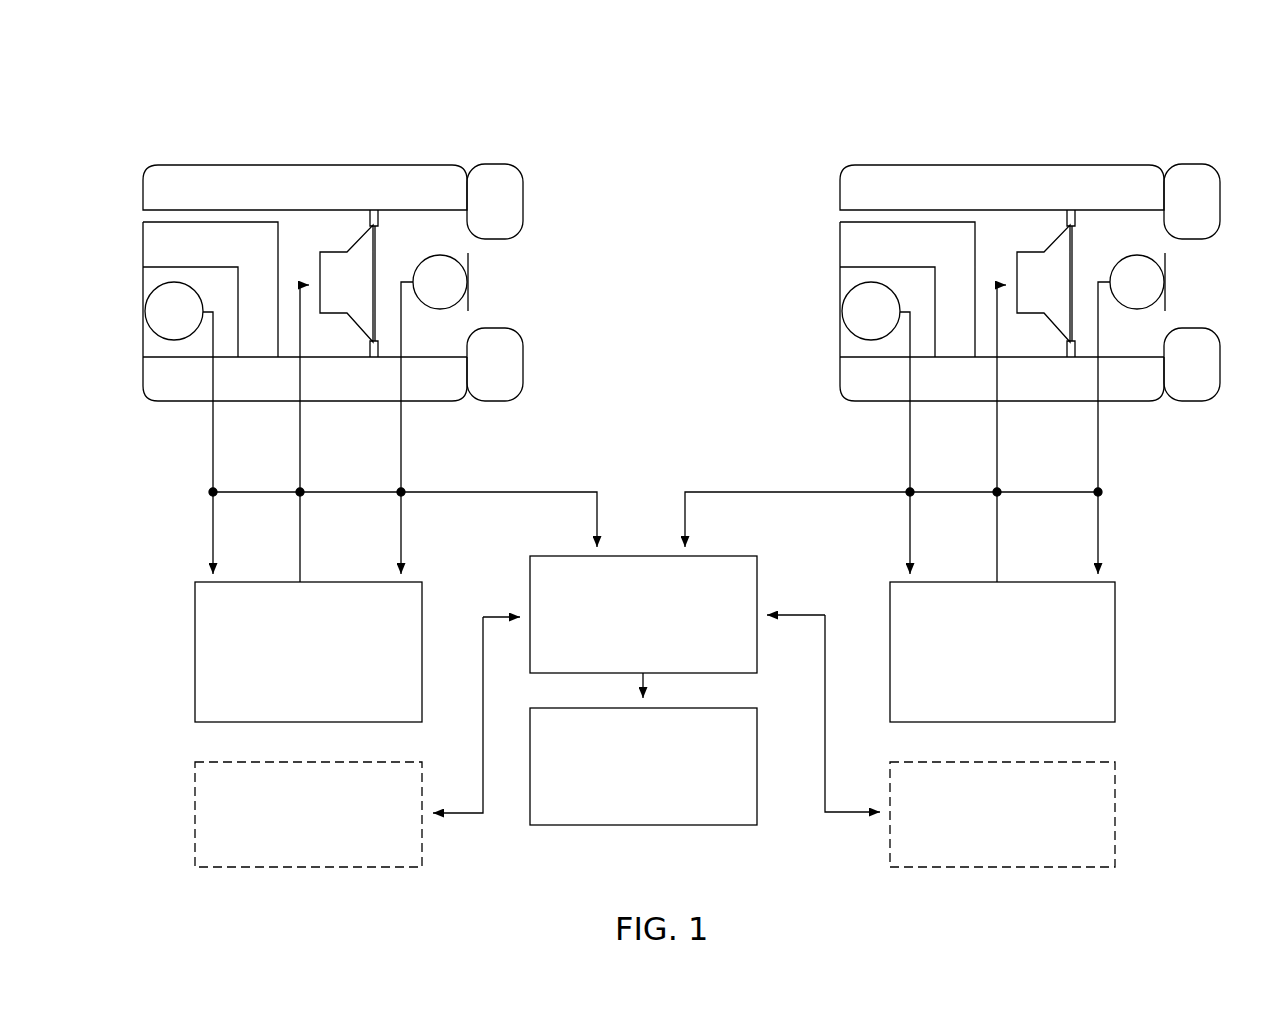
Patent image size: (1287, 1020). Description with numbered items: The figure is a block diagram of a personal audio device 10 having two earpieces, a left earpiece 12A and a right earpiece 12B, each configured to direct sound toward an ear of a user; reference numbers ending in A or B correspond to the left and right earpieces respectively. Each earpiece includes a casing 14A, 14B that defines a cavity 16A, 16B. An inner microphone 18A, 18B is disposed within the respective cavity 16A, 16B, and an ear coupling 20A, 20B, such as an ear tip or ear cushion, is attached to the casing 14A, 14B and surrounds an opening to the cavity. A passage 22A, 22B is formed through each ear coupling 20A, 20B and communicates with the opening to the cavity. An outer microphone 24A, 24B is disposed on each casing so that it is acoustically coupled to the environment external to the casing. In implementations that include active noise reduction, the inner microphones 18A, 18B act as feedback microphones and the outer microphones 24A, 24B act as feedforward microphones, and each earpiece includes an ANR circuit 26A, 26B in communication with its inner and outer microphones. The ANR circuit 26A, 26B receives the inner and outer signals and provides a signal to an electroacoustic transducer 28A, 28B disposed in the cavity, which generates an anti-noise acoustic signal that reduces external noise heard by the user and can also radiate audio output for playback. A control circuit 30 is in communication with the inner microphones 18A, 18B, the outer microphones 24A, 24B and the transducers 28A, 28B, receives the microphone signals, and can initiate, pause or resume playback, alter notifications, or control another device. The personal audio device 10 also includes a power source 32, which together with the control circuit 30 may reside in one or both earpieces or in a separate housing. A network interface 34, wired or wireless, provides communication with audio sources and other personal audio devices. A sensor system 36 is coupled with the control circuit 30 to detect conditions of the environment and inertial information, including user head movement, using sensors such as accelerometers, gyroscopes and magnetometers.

The personal audio device 10 is at (702, 106).
The left earpiece 12A is at (187, 109).
The right earpiece 12B is at (882, 109).
The casing 14A is at (300, 198).
The casing 14B is at (997, 198).
The cavity 16A is at (457, 329).
The cavity 16B is at (1154, 329).
The inner microphone 18A is at (422, 292).
The inner microphone 18B is at (1119, 292).
The ear coupling 20A is at (512, 212).
The ear coupling 20B is at (1209, 212).
The passage 22A is at (509, 270).
The passage 22B is at (1206, 270).
The outer microphone 24A is at (156, 321).
The outer microphone 24B is at (853, 321).
The ANR circuit 26A is at (290, 671).
The ANR circuit 26B is at (984, 671).
The electroacoustic transducer 28A is at (327, 295).
The electroacoustic transducer 28B is at (1024, 295).
The control circuit 30 is at (631, 653).
The power source 32 is at (631, 815).
The network interface 34 is at (296, 853).
The sensor system 36 is at (990, 843).